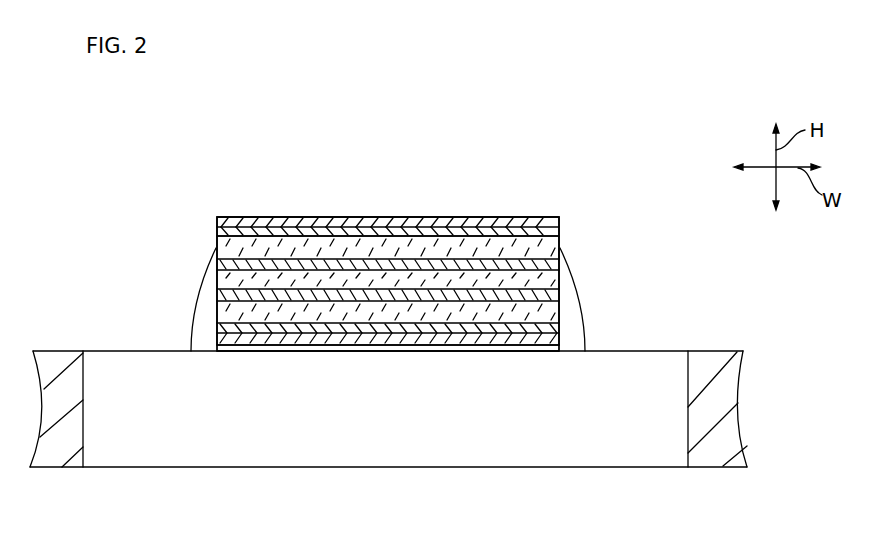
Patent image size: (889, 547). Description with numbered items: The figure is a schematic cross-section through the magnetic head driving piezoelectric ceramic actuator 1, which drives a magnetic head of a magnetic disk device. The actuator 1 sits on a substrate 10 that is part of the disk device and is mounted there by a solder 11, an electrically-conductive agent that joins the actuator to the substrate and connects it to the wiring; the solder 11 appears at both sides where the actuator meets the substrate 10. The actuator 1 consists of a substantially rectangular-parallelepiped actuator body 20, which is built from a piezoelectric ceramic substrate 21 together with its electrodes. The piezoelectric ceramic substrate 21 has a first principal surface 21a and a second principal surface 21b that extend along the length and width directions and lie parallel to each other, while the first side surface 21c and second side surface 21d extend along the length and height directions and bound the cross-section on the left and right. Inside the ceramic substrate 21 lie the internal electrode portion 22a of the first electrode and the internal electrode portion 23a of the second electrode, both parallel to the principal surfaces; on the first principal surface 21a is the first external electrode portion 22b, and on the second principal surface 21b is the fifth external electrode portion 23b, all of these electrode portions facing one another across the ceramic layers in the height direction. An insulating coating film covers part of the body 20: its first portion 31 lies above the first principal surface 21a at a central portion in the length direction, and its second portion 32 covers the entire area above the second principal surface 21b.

The magnetic head driving piezoelectric ceramic actuator 1 is at (530, 199).
The substrate 10 is at (748, 418).
The solder 11 is at (583, 326).
The actuator body 20 is at (388, 166).
The piezoelectric ceramic substrate 21 is at (231, 237).
The first principal surface 21a is at (387, 323).
The second principal surface 21b is at (387, 234).
The first side surface 21c is at (217, 278).
The second side surface 21d is at (560, 278).
The internal electrode portion 22a is at (335, 258).
The first external electrode portion 22b is at (488, 330).
The internal electrode portion 23a is at (323, 300).
The fifth external electrode portion 23b is at (458, 226).
The first portion 31 is at (270, 345).
The second portion 32 is at (362, 217).